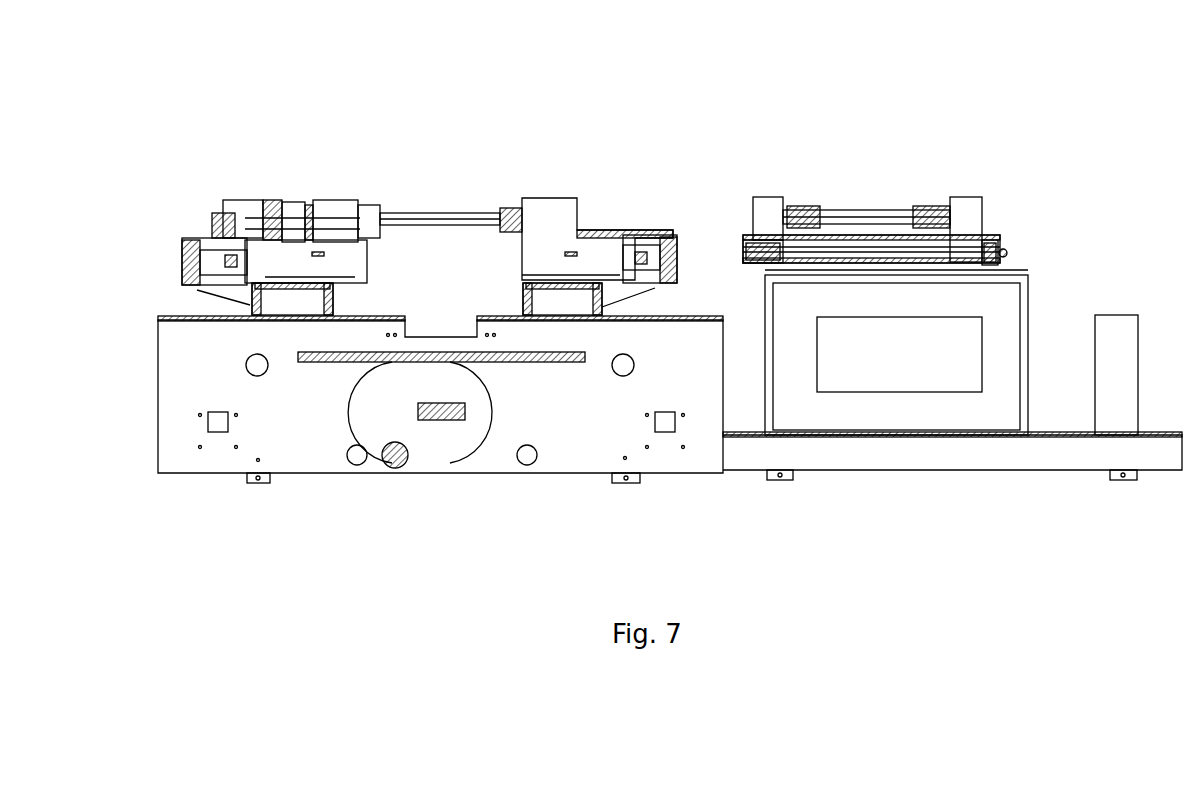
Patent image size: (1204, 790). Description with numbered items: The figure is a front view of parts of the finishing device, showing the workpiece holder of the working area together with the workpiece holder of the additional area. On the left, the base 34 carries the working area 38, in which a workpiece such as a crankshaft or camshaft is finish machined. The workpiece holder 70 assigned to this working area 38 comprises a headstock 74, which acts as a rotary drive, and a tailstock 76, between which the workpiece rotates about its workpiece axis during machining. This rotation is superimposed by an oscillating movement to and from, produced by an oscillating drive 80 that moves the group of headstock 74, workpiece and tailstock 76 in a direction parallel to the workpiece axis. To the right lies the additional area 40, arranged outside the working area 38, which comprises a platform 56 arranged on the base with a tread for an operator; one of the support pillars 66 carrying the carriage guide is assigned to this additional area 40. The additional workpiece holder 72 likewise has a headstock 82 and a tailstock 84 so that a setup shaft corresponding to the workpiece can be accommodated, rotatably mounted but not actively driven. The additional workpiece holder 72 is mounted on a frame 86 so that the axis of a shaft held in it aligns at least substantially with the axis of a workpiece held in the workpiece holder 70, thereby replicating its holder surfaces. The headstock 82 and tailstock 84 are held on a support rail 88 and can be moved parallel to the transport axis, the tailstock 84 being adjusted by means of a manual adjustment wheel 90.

The base 34 is at (175, 393).
The working area 38 is at (452, 130).
The additional area 40 is at (880, 140).
The platform 56 is at (926, 455).
The support pillar 66 is at (1128, 355).
The workpiece holder 70 is at (222, 183).
The additional workpiece holder 72 is at (990, 172).
The headstock 74 is at (343, 200).
The tailstock 76 is at (568, 198).
The oscillating drive 80 is at (165, 262).
The headstock 82 is at (765, 212).
The tailstock 84 is at (1002, 207).
The frame 86 is at (1012, 352).
The support rail 88 is at (1005, 236).
The manual adjustment wheel 90 is at (1008, 253).